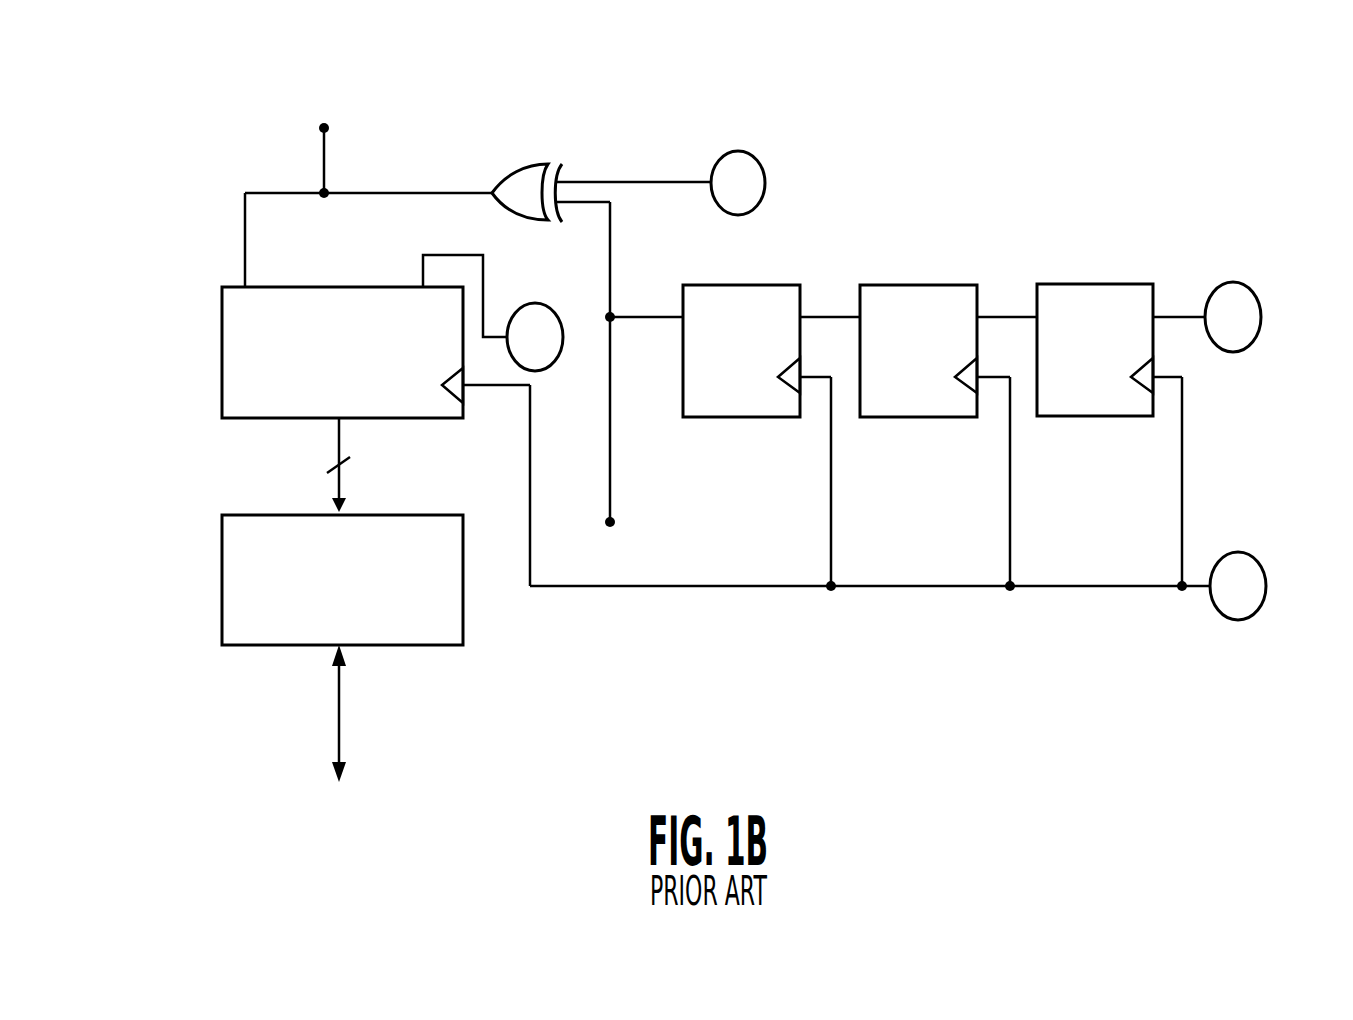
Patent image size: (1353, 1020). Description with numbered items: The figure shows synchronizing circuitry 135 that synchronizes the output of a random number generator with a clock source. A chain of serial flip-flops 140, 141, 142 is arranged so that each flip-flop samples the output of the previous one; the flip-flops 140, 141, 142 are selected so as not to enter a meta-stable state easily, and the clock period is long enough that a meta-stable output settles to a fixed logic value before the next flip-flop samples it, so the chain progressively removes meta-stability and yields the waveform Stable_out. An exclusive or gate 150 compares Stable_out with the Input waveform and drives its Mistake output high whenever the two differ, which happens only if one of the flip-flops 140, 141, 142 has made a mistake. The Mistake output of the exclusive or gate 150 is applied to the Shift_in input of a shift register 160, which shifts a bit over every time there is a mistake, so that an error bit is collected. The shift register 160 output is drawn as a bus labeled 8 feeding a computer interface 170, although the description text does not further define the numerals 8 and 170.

The synchronizing circuitry 135 is at (1076, 117).
The flip-flop 140 is at (1085, 281).
The flip-flop 141 is at (897, 283).
The flip-flop 142 is at (718, 417).
The exclusive or gate 150 is at (541, 163).
The shift register 160 is at (222, 366).
The computer interface 170 is at (463, 615).
The 8-bit bus 8 is at (348, 465).